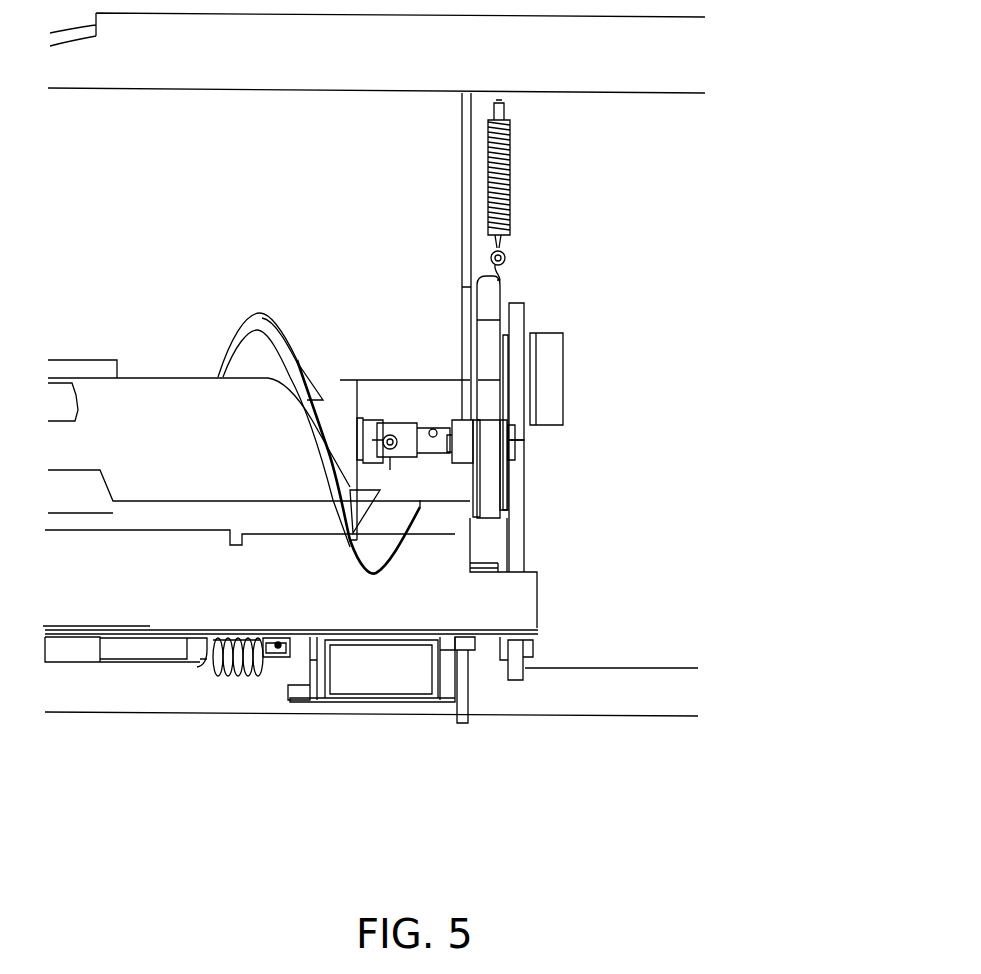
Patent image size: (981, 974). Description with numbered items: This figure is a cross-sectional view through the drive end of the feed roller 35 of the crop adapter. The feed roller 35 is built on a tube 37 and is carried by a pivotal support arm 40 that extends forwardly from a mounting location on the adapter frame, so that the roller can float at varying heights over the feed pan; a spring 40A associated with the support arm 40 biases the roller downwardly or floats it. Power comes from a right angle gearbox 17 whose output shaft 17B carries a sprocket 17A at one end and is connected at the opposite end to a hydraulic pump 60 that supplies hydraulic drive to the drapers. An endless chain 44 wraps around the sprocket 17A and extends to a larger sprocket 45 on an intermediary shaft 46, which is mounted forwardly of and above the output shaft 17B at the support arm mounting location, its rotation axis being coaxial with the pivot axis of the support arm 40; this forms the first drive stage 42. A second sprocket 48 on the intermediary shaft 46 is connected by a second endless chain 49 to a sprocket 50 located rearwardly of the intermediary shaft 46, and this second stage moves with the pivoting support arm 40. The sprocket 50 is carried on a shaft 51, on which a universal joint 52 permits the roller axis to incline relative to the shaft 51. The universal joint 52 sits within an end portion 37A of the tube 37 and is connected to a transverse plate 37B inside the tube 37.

The gearbox 17 is at (388, 678).
The sprocket 17A is at (515, 670).
The output shaft 17B is at (478, 665).
The feed roller 35 is at (151, 397).
The tube 37 is at (311, 385).
The end portion 37A is at (382, 380).
The transverse plate 37B is at (358, 400).
The support arm 40 is at (462, 296).
The spring 40A is at (485, 180).
The first drive stage 42 is at (550, 464).
The endless chain 44 is at (517, 528).
The larger sprocket 45 is at (515, 328).
The intermediary shaft 46 is at (503, 373).
The second sprocket 48 is at (490, 315).
The endless chain 49 is at (460, 347).
The sprocket 50 is at (500, 478).
The shaft 51 is at (515, 415).
The universal joint 52 is at (373, 457).
The hydraulic pump 60 is at (195, 655).